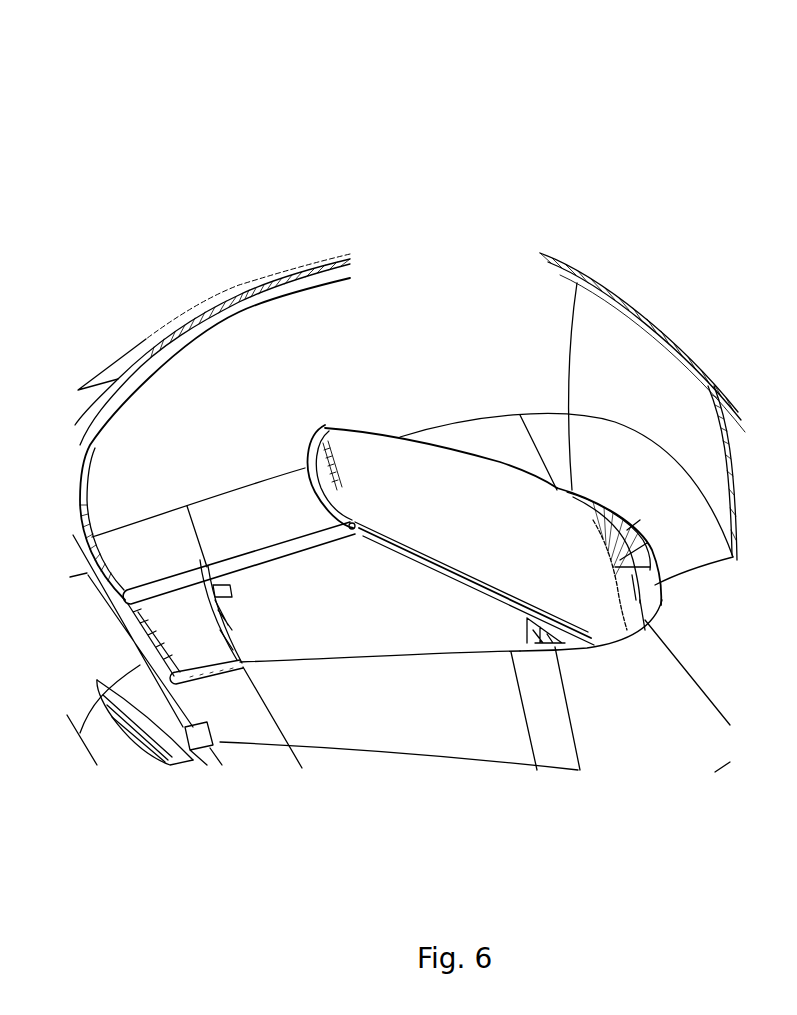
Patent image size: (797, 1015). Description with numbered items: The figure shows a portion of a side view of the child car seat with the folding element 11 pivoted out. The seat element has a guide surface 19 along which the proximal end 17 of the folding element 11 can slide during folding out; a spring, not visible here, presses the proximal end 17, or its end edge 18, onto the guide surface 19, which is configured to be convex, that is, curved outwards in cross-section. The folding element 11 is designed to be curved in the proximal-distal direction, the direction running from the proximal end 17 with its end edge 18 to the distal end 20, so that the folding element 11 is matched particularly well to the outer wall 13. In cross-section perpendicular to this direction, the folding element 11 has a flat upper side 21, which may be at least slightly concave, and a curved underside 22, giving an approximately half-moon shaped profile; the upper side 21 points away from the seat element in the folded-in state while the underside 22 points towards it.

The folding element 11 is at (443, 480).
The outer wall 13 is at (600, 348).
The proximal end 17 is at (610, 623).
The end edge 18 is at (625, 593).
The guide surface 19 is at (633, 592).
The distal end 20 is at (354, 455).
The upper side 21 is at (420, 523).
The underside 22 is at (367, 537).